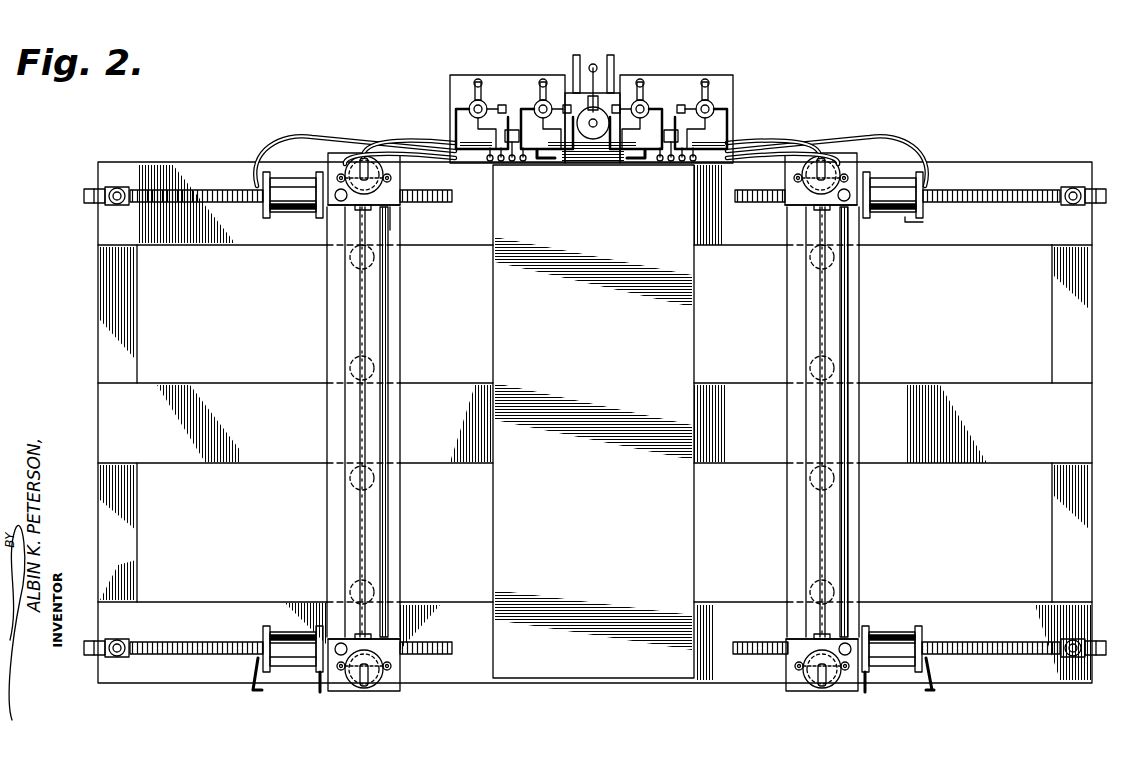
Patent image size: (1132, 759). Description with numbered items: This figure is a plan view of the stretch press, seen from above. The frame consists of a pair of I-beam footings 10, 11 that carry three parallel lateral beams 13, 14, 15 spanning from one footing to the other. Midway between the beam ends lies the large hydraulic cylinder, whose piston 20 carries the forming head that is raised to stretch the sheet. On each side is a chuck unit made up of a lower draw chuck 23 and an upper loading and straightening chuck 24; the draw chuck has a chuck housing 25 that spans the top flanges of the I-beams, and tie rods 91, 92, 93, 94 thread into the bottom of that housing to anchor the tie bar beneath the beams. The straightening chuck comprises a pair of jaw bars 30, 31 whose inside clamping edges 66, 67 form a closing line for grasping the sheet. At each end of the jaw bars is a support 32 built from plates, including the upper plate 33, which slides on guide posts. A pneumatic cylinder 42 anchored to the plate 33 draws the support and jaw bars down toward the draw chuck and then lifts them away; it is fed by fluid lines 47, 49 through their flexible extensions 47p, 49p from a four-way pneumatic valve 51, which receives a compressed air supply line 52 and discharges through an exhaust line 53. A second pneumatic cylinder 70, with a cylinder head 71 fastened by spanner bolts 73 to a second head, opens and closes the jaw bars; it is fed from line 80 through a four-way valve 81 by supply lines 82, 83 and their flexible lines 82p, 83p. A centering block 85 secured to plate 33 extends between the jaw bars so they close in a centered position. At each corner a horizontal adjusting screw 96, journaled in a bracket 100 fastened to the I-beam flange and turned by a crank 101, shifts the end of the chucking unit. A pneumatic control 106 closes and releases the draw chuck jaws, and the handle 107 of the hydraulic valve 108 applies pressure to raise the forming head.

The footing 10 is at (1052, 345).
The footing 11 is at (137, 345).
The lateral beam 13 is at (178, 600).
The lateral beam 14 is at (98, 403).
The lateral beam 15 is at (98, 226).
The piston 20 is at (593, 421).
The draw chuck 23 is at (321, 425).
The loading and straightening chuck 24 is at (386, 352).
The chuck housing 25 is at (327, 557).
The jaw bar 30 is at (372, 525).
The jaw bar 31 is at (352, 520).
The support 32 is at (352, 155).
The plate 33 is at (395, 216).
The pneumatic cylinder 42 is at (402, 176).
The fluid line 47 is at (455, 112).
The flexible extension 47p is at (385, 145).
The fluid line 49 is at (498, 105).
The flexible extension 49p is at (400, 150).
The 4-way pneumatic valve 51 is at (462, 100).
The compressed air supply line 52 is at (512, 142).
The exhaust line 53 is at (472, 84).
The clamping edge 66 is at (370, 324).
The clamping edge 67 is at (357, 305).
The pneumatic cylinder 70 is at (280, 222).
The cylinder head 71 is at (263, 212).
The spanner bolt 73 is at (909, 229).
The line 80 is at (522, 105).
The 4-way valve 81 is at (545, 80).
The supply line 82 is at (550, 160).
The flexible line 82p is at (283, 135).
The supply line 83 is at (540, 82).
The flexible line 83p is at (363, 138).
The centering block 85 is at (355, 213).
The tie rod 91 is at (374, 265).
The tie rod 92 is at (350, 368).
The tie rod 93 is at (350, 480).
The tie rod 94 is at (810, 592).
The horizontal adjusting screw 96 is at (190, 188).
The bracket 100 is at (118, 186).
The crank 101 is at (88, 190).
The pneumatic control 106 is at (580, 60).
The handle 107 is at (600, 65).
The hydraulic valve 108 is at (600, 140).